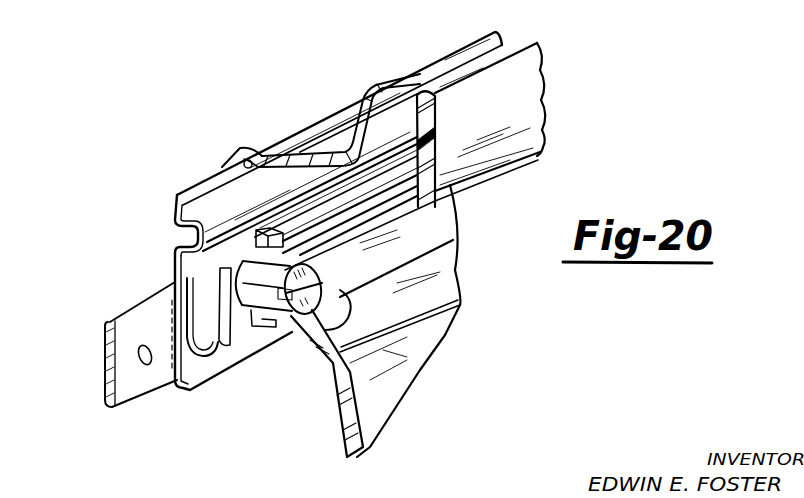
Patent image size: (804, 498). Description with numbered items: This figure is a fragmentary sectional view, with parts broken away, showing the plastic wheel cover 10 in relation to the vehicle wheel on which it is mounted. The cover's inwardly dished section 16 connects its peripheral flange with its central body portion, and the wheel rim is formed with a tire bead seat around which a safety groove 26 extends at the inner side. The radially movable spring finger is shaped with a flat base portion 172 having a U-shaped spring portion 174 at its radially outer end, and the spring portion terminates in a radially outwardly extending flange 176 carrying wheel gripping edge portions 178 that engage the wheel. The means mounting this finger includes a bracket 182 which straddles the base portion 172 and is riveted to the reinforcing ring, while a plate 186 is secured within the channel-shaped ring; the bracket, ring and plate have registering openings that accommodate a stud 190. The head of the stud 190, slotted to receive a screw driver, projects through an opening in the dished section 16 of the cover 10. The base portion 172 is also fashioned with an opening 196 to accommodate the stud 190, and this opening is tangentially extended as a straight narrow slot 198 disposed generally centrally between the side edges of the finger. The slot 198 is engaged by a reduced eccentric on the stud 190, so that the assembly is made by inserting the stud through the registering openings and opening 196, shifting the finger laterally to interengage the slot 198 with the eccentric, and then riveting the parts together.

The wheel cover 10 is at (340, 443).
The inwardly dished section 16 is at (363, 274).
The safety groove 26 is at (258, 150).
The flat base portion 172 is at (187, 268).
The U-shaped spring portion 174 is at (187, 234).
The radially outwardly extending flange 176 is at (212, 190).
The wheel gripping edge portions 178 is at (177, 198).
The bracket 182 is at (130, 327).
The plate 186 is at (322, 250).
The stud 190 is at (250, 333).
The opening 196 is at (207, 335).
The slot 198 is at (224, 281).